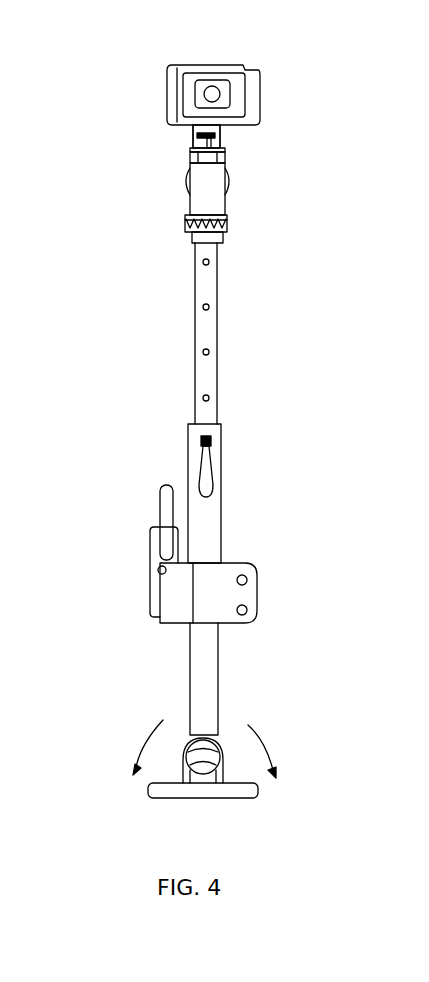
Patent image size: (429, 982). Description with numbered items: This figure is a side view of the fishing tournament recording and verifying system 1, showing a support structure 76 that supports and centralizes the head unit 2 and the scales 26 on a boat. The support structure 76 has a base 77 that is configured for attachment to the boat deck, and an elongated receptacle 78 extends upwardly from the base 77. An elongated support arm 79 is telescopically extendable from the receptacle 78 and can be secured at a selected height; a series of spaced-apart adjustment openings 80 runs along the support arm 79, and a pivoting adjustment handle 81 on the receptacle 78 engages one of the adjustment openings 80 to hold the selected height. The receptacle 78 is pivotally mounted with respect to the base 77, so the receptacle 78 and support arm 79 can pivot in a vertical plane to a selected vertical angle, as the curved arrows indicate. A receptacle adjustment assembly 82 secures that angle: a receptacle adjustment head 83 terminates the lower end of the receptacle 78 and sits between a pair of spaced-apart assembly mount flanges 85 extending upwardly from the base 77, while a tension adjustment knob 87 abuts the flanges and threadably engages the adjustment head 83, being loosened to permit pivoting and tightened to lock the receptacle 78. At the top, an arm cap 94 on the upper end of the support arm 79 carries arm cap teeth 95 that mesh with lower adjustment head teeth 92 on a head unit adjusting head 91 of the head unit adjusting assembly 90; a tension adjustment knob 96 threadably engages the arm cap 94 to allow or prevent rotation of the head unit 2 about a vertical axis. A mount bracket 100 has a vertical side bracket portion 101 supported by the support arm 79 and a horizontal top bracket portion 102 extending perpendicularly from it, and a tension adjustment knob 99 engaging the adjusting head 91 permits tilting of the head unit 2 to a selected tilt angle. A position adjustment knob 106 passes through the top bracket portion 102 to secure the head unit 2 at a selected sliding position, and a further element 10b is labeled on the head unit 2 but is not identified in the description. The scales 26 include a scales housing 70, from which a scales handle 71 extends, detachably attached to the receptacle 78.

The fishing tournament recording and verifying system 1 is at (106, 52).
The head unit 2 is at (156, 93).
The top bracket portion 102 is at (196, 66).
The lens 10b is at (214, 86).
The position adjustment knob 106 is at (222, 133).
The mount bracket 100 is at (184, 135).
The head unit adjusting assembly 90 is at (242, 196).
The side bracket portion 101 is at (228, 150).
The tension adjustment knob 96 is at (190, 157).
The head unit adjusting head 91 is at (208, 180).
The tension adjustment knob 99 is at (188, 185).
The lower adjustment head teeth 92 is at (194, 232).
The arm cap teeth 95 is at (226, 221).
The arm cap 94 is at (222, 237).
The support structure 76 is at (118, 295).
The support arm 79 is at (208, 330).
The adjustment openings 80 is at (188, 352).
The adjustment handle 81 is at (198, 462).
The scales handle 71 is at (158, 500).
The scales 26 is at (270, 582).
The scales housing 70 is at (208, 613).
The receptacle 78 is at (205, 673).
The tension adjustment knob 87 is at (205, 735).
The receptacle adjustment assembly 82 is at (183, 723).
The receptacle adjustment head 83 is at (218, 729).
The assembly mount flanges 85 is at (205, 778).
The base 77 is at (250, 795).